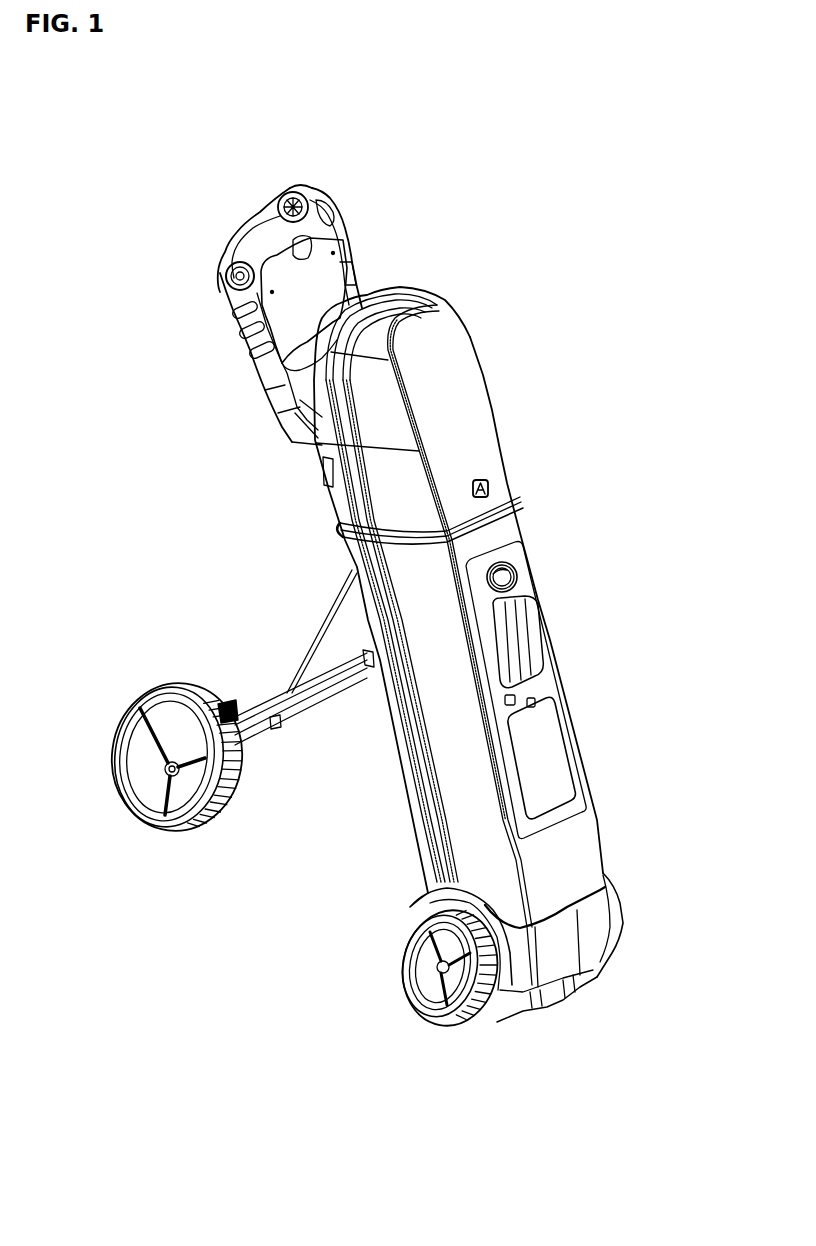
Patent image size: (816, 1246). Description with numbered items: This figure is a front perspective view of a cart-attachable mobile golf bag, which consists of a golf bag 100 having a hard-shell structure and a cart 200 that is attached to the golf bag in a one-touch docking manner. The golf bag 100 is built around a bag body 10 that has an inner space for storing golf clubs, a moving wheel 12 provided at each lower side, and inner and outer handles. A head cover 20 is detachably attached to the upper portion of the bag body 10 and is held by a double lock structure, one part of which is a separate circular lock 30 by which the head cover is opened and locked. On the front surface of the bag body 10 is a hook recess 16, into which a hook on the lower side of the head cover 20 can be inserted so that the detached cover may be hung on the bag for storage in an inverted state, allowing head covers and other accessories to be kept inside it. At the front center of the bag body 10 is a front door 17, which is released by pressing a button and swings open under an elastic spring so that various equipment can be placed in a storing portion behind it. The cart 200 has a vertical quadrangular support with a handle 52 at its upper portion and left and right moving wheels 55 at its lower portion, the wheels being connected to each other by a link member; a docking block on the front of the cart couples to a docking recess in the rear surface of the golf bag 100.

The golf bag 100 is at (567, 427).
The cart 200 is at (193, 247).
The bag body 10 is at (602, 832).
The moving wheel 12 is at (436, 1024).
The hook recess 16 is at (540, 683).
The front door 17 is at (550, 763).
The head cover 20 is at (483, 368).
The circular lock 30 is at (507, 558).
The handle 52 is at (313, 187).
The moving wheels 55 is at (170, 825).